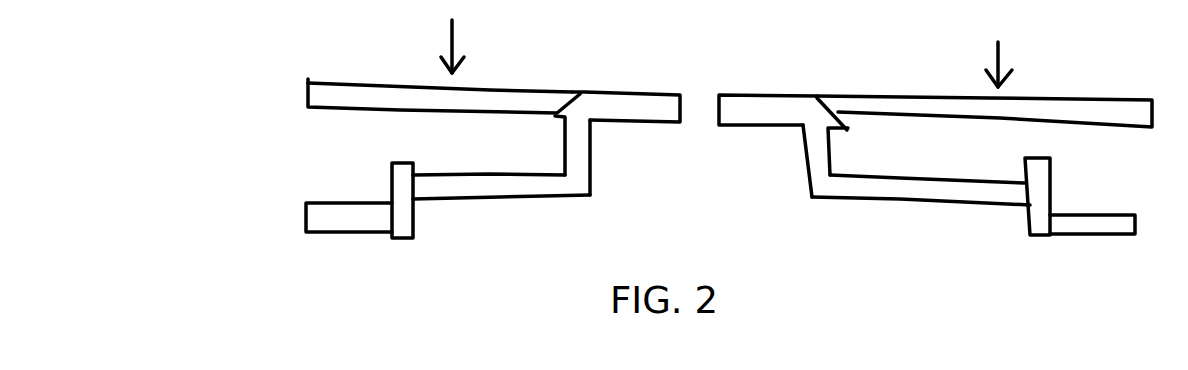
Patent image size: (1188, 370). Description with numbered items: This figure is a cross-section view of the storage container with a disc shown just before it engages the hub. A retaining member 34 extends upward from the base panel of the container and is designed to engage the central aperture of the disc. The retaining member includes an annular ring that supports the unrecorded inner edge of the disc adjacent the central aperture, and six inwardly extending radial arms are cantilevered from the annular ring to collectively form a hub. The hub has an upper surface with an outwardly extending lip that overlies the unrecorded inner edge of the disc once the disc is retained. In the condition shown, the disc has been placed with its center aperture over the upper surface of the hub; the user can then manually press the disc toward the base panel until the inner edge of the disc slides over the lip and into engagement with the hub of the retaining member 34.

The retaining member 34 is at (240, 181).